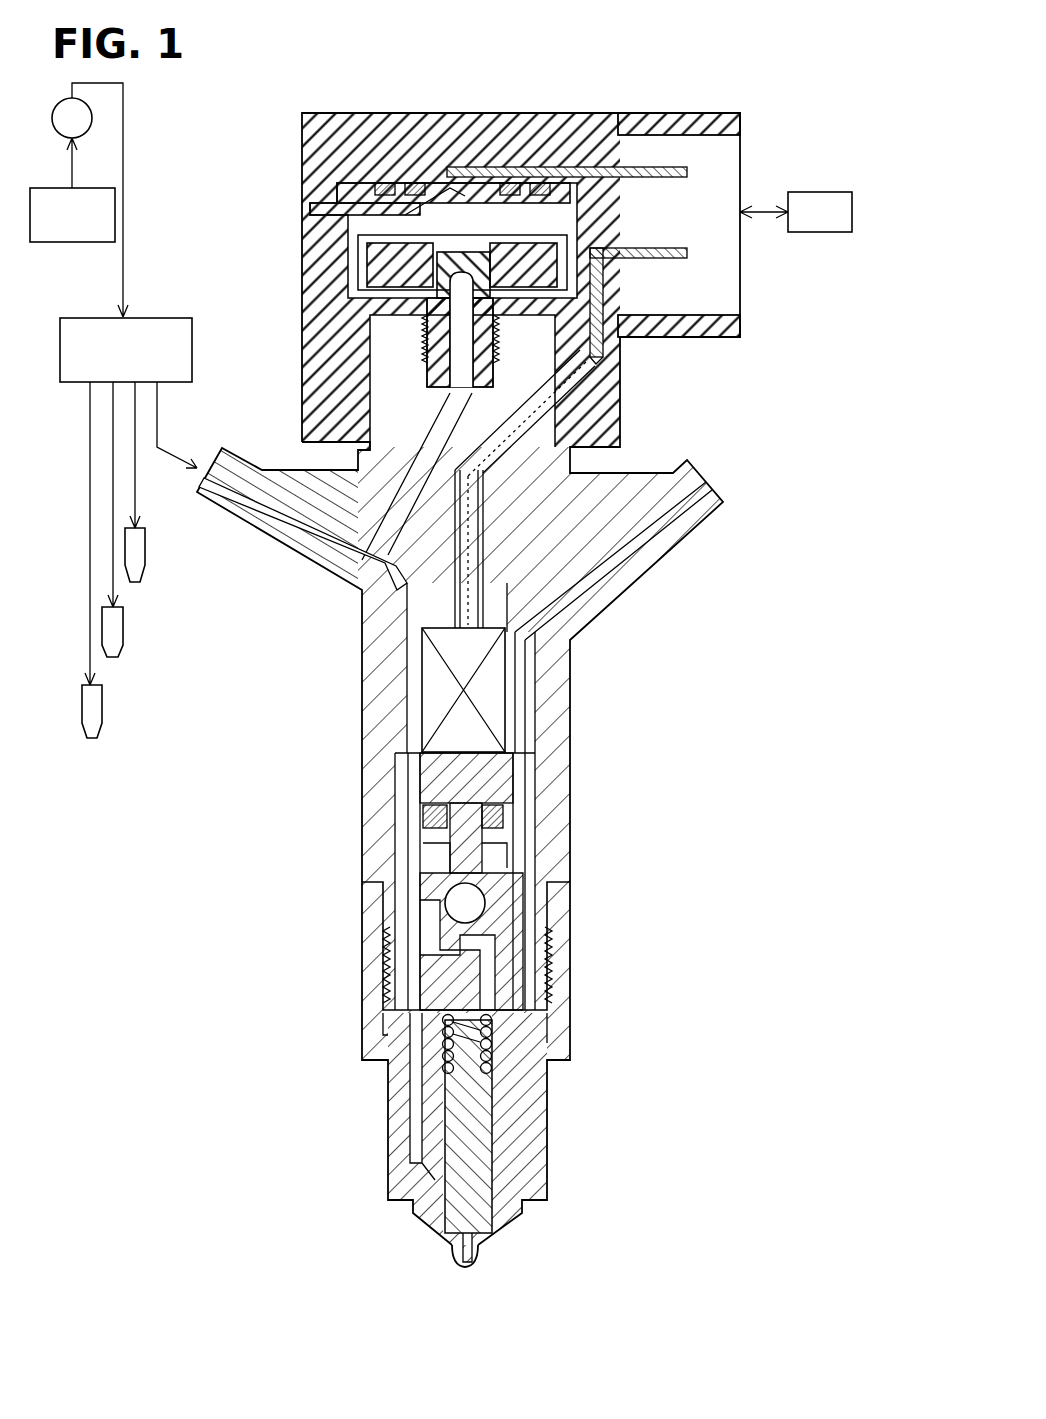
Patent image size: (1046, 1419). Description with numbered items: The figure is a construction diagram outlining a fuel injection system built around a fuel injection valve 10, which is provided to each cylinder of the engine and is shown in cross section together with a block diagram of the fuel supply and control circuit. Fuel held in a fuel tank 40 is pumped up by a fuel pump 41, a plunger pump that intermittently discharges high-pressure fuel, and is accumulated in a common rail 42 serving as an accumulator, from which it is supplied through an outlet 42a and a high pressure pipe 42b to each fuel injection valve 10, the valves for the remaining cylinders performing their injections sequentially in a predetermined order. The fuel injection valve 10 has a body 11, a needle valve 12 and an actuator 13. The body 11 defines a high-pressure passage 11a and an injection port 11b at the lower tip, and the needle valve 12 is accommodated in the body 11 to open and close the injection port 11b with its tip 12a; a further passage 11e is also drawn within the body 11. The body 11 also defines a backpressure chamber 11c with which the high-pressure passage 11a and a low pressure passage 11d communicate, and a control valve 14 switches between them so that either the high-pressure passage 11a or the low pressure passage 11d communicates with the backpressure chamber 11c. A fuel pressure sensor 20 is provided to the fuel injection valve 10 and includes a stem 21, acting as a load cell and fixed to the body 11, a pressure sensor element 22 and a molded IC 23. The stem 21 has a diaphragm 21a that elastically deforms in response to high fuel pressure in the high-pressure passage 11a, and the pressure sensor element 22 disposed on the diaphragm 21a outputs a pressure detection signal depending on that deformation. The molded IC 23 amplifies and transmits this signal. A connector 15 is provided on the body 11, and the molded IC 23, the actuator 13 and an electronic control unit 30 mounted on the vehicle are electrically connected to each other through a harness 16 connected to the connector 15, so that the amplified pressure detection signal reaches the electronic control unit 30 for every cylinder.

The fuel injection valve 10 is at (457, 675).
The body 11 is at (375, 660).
The high-pressure passage 11a is at (285, 517).
The injection port 11b is at (473, 1260).
The backpressure chamber 11c is at (478, 1010).
The low pressure passage 11d is at (633, 540).
The fuel passage 11e is at (407, 478).
The needle valve 12 is at (478, 1120).
The needle tip 12a is at (458, 1237).
The actuator 13 is at (443, 708).
The control valve 14 is at (465, 903).
The connector 15 is at (782, 114).
The harness 16 is at (764, 216).
The fuel pressure sensor 20 is at (399, 360).
The stem 21 is at (420, 322).
The diaphragm 21a is at (592, 332).
The pressure sensor element 22 is at (455, 200).
The molded IC 23 is at (548, 245).
The electronic control unit 30 is at (816, 192).
The fuel tank 40 is at (72, 243).
The fuel pump 41 is at (86, 134).
The common rail 42 is at (165, 318).
The outlet 42a is at (162, 385).
The high pressure pipe 42b is at (160, 420).